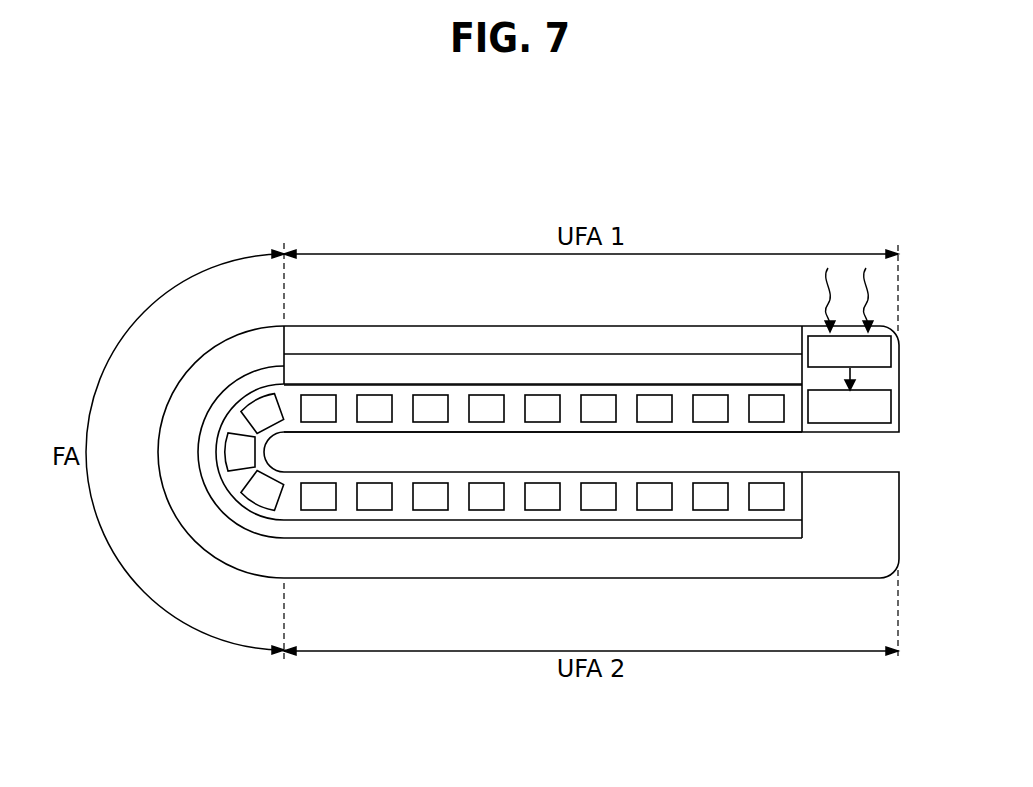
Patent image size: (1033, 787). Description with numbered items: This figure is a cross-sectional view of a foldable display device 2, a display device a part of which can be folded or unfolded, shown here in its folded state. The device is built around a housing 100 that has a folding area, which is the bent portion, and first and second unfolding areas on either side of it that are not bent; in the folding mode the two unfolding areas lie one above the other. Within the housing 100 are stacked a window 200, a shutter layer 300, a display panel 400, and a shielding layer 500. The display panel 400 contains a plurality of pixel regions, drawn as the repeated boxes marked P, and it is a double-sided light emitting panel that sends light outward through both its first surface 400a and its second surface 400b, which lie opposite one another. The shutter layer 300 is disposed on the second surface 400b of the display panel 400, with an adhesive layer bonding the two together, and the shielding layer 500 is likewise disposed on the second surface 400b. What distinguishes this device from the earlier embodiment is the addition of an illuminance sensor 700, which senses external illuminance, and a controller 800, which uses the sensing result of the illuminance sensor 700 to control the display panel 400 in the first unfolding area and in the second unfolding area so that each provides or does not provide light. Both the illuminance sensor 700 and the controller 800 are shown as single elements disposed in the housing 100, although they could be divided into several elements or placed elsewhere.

The foldable display device 2 is at (527, 172).
The housing 100 is at (892, 380).
The window 200 is at (617, 332).
The shutter layer 300 is at (682, 362).
The display panel 400 is at (742, 388).
The first surface 400a is at (490, 434).
The second surface 400b is at (534, 385).
The shielding layer 500 is at (737, 530).
The illuminance sensor 700 is at (892, 350).
The controller 800 is at (891, 408).